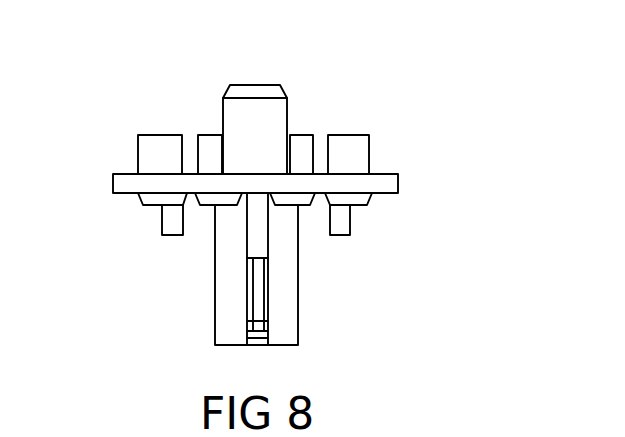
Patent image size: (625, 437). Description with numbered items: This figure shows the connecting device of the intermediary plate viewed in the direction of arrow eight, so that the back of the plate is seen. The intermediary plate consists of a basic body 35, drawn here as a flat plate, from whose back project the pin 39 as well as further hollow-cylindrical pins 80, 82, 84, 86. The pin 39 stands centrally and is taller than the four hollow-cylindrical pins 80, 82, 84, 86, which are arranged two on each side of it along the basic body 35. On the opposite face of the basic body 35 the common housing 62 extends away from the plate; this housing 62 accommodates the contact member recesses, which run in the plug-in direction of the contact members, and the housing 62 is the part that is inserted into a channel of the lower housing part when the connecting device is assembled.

The basic body 35 is at (398, 183).
The pin 39 is at (282, 104).
The housing 62 is at (336, 302).
The hollow-cylindrical pin 80 is at (152, 137).
The hollow-cylindrical pin 82 is at (213, 137).
The hollow-cylindrical pin 84 is at (308, 140).
The hollow-cylindrical pin 86 is at (363, 141).